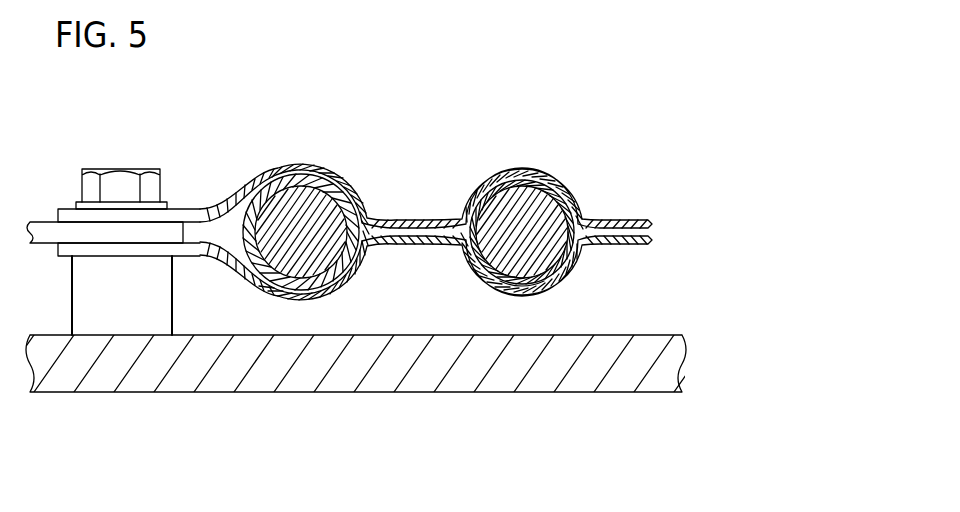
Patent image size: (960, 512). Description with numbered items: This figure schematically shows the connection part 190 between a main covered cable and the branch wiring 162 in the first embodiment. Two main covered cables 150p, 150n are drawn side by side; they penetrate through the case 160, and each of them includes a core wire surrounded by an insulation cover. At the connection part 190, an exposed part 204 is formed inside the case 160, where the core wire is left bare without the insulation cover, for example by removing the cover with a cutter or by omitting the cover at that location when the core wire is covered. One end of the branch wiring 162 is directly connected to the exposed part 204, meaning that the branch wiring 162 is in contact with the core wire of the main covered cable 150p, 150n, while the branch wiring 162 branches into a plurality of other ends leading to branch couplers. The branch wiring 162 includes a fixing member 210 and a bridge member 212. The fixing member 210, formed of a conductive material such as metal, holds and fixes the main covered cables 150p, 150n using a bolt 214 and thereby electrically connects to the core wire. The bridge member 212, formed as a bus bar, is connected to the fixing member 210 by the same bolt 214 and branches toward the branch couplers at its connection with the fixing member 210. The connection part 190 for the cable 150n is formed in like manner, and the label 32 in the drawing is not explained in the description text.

The electric wire pair 32 is at (288, 72).
The main covered cable 150n is at (265, 106).
The main covered cable 150p is at (488, 106).
The connection part 190 is at (584, 189).
The exposed part 204 is at (533, 279).
The case 160 is at (415, 380).
The branch wiring 162 is at (127, 304).
The fixing member 210 is at (203, 250).
The bridge member 212 is at (125, 233).
The bolt 214 is at (120, 183).